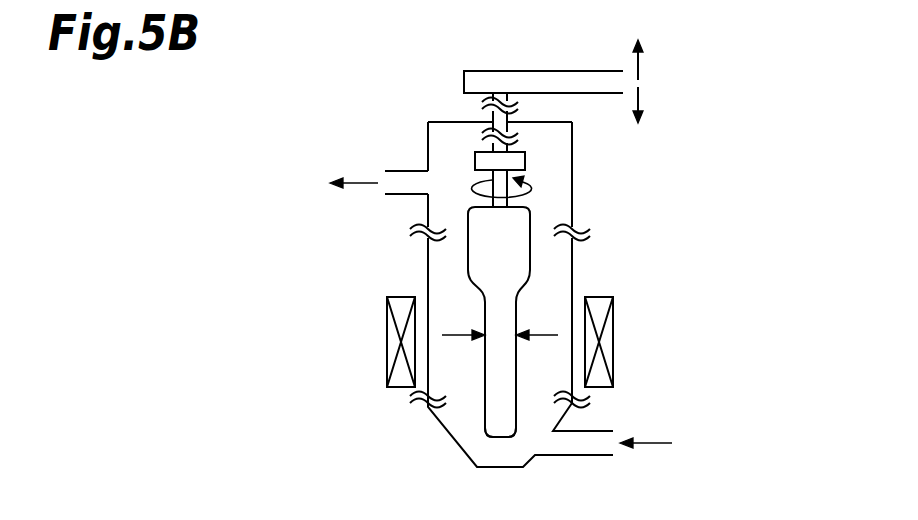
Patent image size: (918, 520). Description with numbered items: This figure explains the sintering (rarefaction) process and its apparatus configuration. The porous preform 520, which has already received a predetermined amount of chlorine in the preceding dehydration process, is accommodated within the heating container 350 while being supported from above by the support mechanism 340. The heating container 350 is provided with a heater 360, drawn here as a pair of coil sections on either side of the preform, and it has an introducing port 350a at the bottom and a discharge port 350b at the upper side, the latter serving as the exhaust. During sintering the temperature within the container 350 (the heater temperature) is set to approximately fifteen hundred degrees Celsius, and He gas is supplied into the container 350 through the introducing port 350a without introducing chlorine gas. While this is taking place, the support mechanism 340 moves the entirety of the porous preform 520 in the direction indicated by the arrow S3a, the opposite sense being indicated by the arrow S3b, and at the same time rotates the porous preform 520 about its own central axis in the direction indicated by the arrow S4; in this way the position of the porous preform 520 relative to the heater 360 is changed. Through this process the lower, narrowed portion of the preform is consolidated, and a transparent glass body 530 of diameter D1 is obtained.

The support mechanism 340 is at (538, 80).
The arrow S3b is at (641, 62).
The arrow S3a is at (641, 98).
The heating container 350 is at (573, 180).
The discharge port 350b is at (403, 170).
The introducing port 350a is at (578, 456).
The arrow S4 is at (530, 189).
The porous preform 520 is at (530, 263).
The diameter D1 is at (502, 322).
The heater 360 is at (387, 340).
The transparent glass body 530 is at (482, 397).